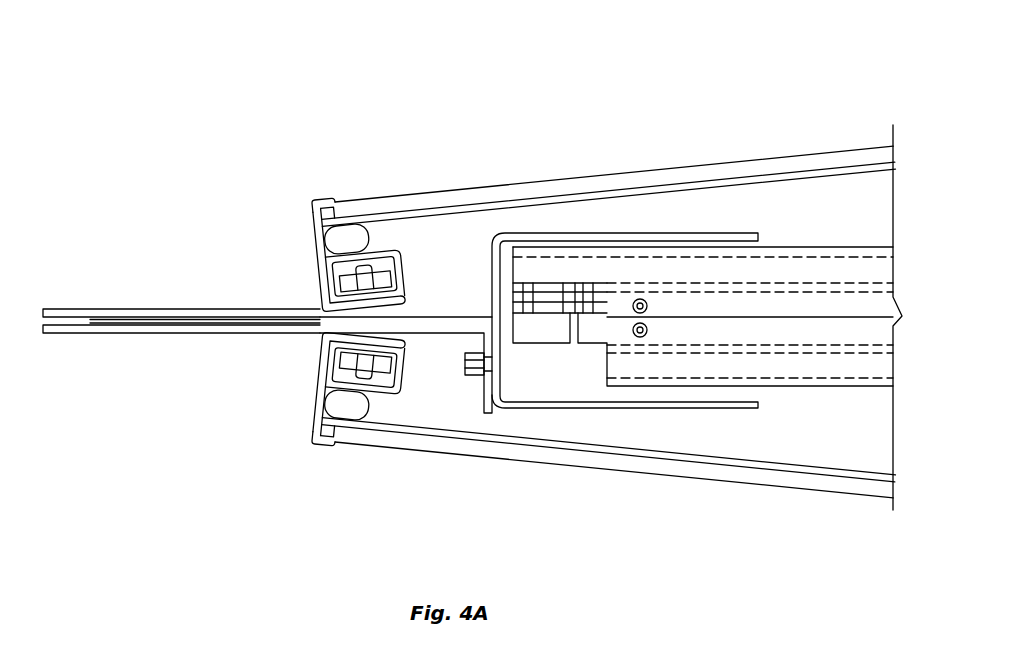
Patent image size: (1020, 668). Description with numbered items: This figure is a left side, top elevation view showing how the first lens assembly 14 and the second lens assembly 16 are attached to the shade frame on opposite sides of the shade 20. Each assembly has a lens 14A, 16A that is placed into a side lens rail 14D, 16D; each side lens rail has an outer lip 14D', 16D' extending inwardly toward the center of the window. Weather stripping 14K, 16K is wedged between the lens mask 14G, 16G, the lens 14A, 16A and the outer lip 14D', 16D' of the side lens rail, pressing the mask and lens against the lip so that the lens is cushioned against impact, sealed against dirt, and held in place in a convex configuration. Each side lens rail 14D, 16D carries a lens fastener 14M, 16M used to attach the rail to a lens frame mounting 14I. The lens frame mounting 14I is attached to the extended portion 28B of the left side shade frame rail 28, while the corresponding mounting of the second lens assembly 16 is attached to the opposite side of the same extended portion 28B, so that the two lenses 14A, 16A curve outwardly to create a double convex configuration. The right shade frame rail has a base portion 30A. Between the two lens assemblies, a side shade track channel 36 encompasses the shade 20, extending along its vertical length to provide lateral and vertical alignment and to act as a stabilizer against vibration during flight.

The first lens assembly 14 is at (469, 449).
The lens 14A is at (648, 470).
The lens mask 14G is at (747, 458).
The side lens rail 14D is at (315, 387).
The outer lip 14D' is at (351, 461).
The weather stripping 14K is at (345, 408).
The lens fastener 14M is at (335, 365).
The lens frame mounting 14I is at (50, 337).
The second lens assembly 16 is at (518, 177).
The lens 16A is at (707, 173).
The lens mask 16G is at (745, 183).
The side lens rail 16D is at (316, 256).
The outer lip 16D' is at (288, 188).
The weather stripping 16K is at (345, 233).
The lens fastener 16M is at (335, 276).
The shade 20 is at (815, 367).
The left side shade frame rail 28 is at (448, 316).
The extended portion 28B is at (113, 312).
The base portion 30A is at (478, 337).
The side shade track channel 36 is at (495, 235).